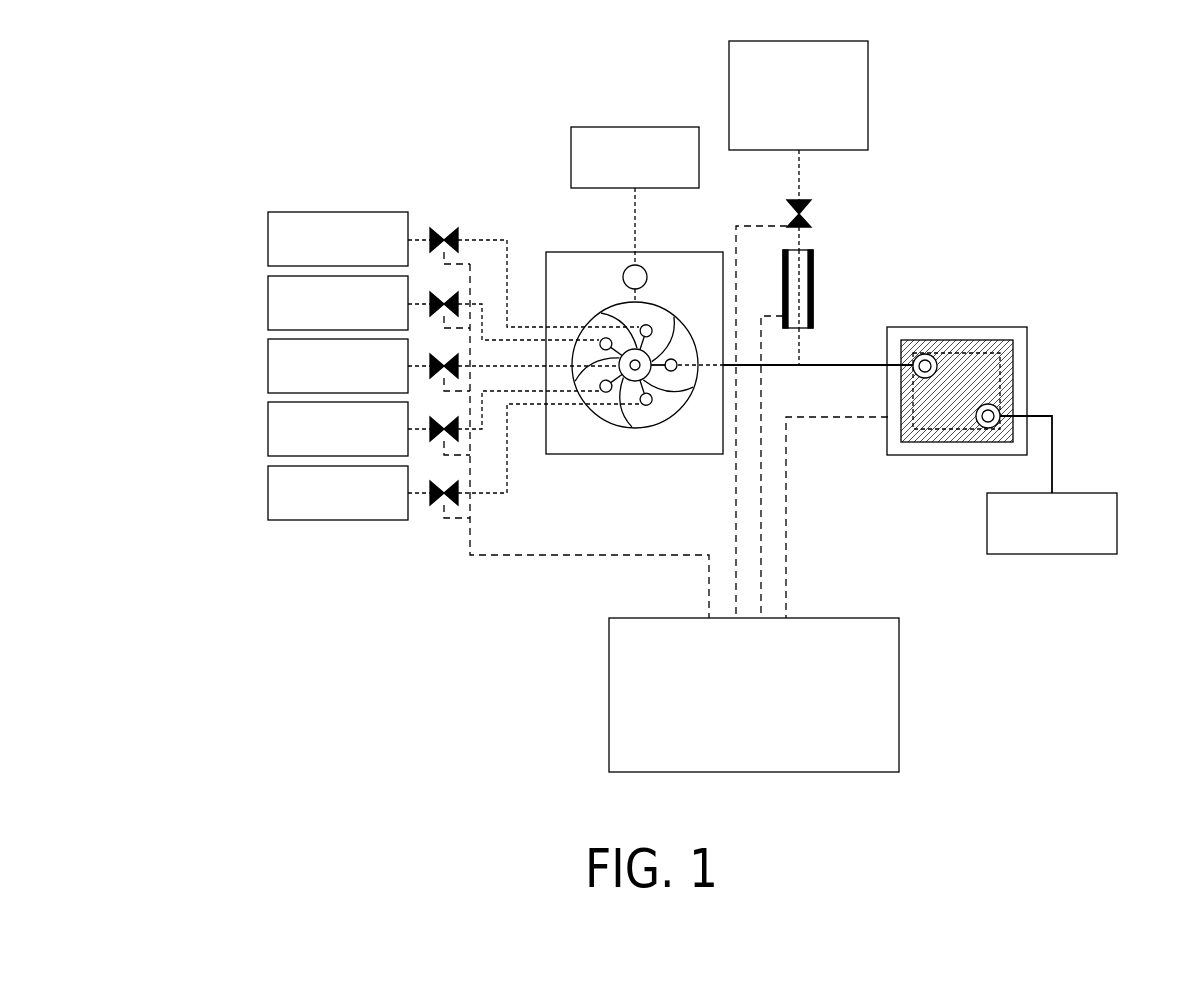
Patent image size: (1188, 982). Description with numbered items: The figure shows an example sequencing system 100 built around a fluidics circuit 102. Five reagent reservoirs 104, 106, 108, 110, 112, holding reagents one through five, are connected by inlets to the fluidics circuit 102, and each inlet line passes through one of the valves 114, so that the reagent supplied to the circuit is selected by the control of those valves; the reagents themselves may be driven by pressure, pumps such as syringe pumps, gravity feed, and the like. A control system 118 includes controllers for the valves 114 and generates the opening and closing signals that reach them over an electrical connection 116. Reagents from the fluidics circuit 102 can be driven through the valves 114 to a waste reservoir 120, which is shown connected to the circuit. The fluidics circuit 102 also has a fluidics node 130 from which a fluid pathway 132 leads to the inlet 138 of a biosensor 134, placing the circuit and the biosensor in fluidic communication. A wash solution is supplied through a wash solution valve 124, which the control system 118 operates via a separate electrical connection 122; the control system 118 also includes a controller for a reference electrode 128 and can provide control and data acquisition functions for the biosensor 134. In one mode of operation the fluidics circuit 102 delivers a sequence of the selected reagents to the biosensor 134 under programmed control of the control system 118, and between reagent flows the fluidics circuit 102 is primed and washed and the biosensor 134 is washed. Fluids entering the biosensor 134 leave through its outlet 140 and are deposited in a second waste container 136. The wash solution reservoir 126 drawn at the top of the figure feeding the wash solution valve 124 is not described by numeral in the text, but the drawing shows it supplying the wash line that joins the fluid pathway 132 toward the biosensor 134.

The system 100 is at (409, 79).
The fluidics circuit 102 is at (662, 292).
The reagent reservoir 104 is at (268, 240).
The reagent reservoir 106 is at (268, 304).
The reagent reservoir 108 is at (268, 366).
The reagent reservoir 110 is at (268, 429).
The reagent reservoir 112 is at (268, 493).
The valves 114 is at (472, 215).
The electrical connection 116 is at (524, 557).
The control system 118 is at (899, 694).
The waste reservoir 120 is at (599, 127).
The electrical connection 122 is at (770, 226).
The wash solution valve 124 is at (829, 199).
The wash solution reservoir 126 is at (868, 97).
The reference electrode 128 is at (813, 285).
The fluidics node 130 is at (634, 372).
The fluid pathway 132 is at (827, 364).
The biosensor 134 is at (1007, 300).
The waste container 136 is at (1083, 493).
The inlet 138 is at (928, 354).
The outlet 140 is at (1002, 413).